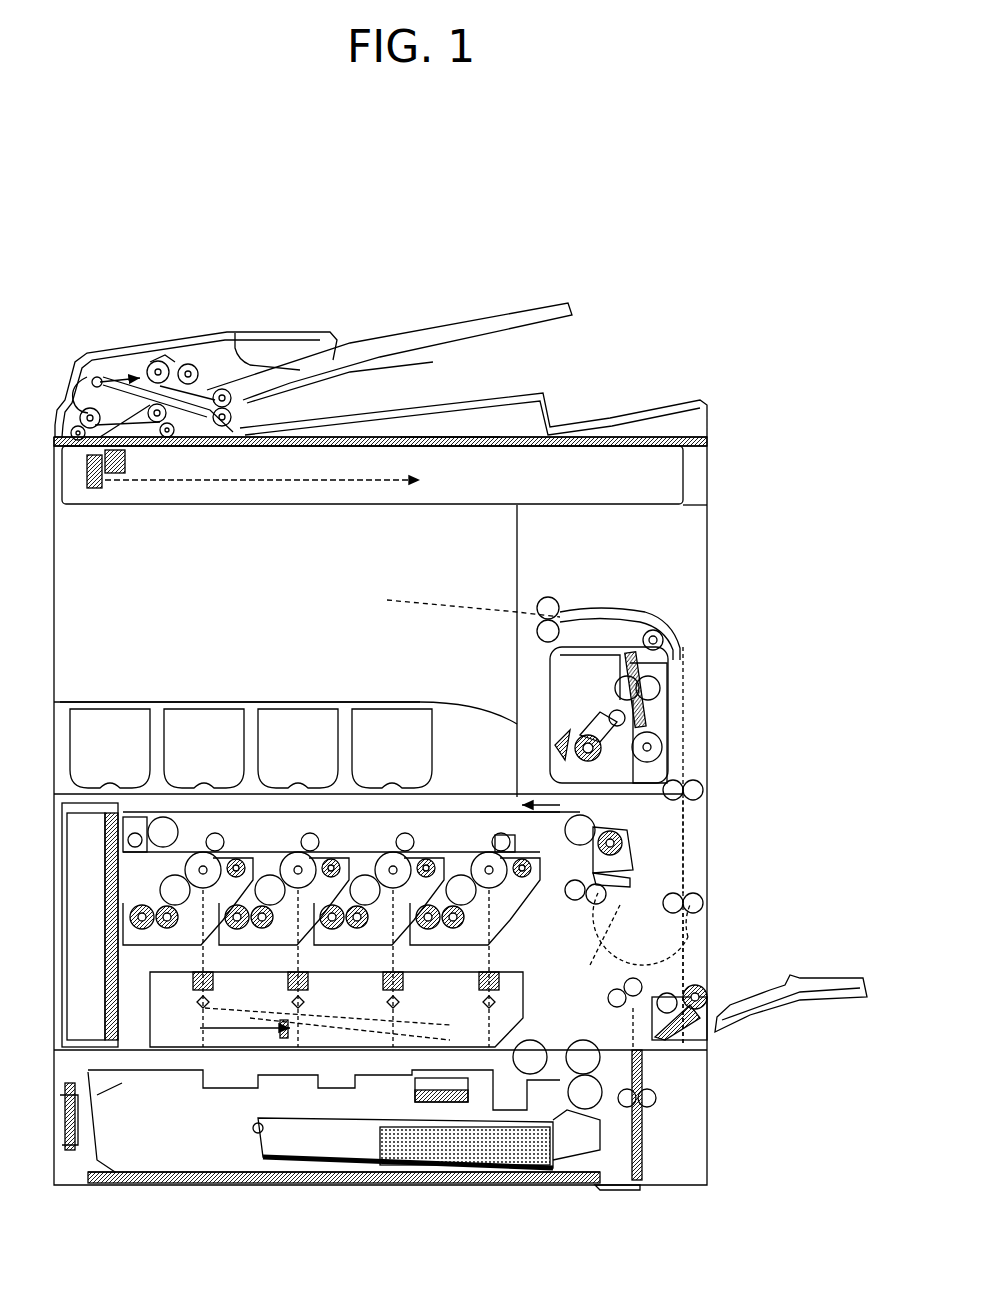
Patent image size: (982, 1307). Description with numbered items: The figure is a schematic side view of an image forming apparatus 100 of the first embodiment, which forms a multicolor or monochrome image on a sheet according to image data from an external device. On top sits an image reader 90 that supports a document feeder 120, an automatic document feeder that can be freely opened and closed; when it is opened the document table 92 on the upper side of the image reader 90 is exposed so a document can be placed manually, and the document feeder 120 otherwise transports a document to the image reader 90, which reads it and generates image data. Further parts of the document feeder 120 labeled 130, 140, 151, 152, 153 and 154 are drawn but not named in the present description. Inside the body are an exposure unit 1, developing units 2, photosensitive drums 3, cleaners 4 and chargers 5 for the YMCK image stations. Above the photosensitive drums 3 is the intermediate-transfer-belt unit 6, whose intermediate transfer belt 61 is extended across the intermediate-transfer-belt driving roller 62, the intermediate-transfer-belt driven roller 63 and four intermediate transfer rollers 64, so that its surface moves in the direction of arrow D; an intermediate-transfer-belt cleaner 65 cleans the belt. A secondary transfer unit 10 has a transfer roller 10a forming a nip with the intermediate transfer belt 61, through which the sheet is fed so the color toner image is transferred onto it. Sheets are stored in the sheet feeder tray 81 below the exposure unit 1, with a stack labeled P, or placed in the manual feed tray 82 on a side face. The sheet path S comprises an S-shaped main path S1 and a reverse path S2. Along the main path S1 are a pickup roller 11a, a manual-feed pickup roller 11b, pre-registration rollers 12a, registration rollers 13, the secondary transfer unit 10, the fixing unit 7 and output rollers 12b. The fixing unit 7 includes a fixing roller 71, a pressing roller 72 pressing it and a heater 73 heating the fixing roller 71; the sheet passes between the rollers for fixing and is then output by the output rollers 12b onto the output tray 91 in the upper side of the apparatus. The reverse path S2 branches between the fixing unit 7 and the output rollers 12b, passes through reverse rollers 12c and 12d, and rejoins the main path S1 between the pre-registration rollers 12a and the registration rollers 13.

The image forming apparatus 100 is at (699, 372).
The exposure unit 1 is at (530, 1000).
The developing units 2 is at (160, 948).
The photosensitive drums 3 is at (203, 852).
The cleaners 4 is at (240, 858).
The chargers 5 is at (203, 948).
The intermediate-transfer-belt unit 6 is at (465, 812).
The intermediate transfer belt 61 is at (500, 815).
The intermediate-transfer-belt driving roller 62 is at (610, 830).
The intermediate-transfer-belt driven roller 63 is at (165, 818).
The intermediate transfer rollers 64 is at (220, 834).
The intermediate-transfer-belt cleaner 65 is at (135, 833).
The fixing unit 7 is at (668, 712).
The fixing roller 71 is at (635, 705).
The pressing roller 72 is at (650, 747).
The heater 73 is at (605, 712).
The sheet feeder tray 81 is at (325, 1122).
The manual feed tray 82 is at (800, 980).
The image reader 90 is at (683, 478).
The output tray 91 is at (275, 702).
The document table 92 is at (462, 435).
The secondary transfer unit 10 is at (630, 880).
The transfer roller 10a is at (633, 850).
The pickup roller 11a is at (528, 1042).
The manual-feed pickup roller 11b is at (707, 995).
The pre-registration rollers 12a is at (642, 990).
The output rollers 12b is at (552, 597).
The reverse rollers 12c is at (703, 790).
The reverse rollers 12d is at (703, 903).
The registration rollers 13 is at (605, 898).
The document feeder 120 is at (154, 335).
The document tray 130 is at (410, 325).
The document cover 140 is at (537, 393).
The conveyance roller 151 is at (228, 388).
The separation roller 152 is at (192, 362).
The document path 153 is at (100, 360).
The pickup roller 154 is at (158, 360).
The sheet path S is at (580, 962).
The main path S1 is at (582, 932).
The reverse path S2 is at (690, 848).
The direction of arrow D is at (540, 794).
The sheet stack P is at (425, 1122).